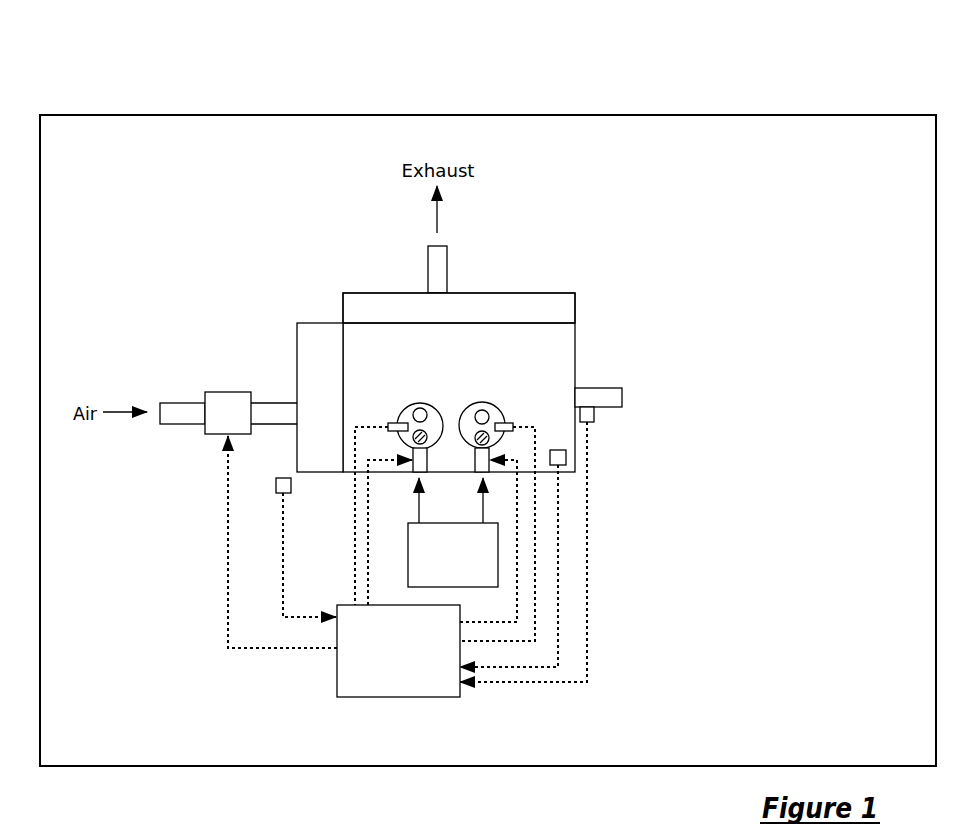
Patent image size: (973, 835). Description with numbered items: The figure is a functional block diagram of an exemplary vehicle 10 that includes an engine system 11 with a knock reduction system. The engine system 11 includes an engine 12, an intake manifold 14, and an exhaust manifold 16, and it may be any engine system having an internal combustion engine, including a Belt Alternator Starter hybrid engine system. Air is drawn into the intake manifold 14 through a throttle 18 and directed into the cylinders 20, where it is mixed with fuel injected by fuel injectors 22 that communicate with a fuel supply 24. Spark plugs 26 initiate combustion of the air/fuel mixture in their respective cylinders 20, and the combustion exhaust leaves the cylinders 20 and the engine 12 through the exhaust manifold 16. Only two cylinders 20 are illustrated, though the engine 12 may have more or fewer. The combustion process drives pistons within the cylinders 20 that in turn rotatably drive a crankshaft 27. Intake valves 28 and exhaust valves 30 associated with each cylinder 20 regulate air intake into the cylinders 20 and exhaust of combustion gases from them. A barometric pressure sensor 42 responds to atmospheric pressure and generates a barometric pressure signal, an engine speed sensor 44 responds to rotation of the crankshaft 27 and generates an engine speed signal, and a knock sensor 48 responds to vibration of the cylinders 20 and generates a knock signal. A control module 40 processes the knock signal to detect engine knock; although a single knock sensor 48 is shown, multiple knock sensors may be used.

The vehicle 10 is at (604, 88).
The engine system 11 is at (270, 309).
The engine 12 is at (575, 345).
The intake manifold 14 is at (322, 323).
The exhaust manifold 16 is at (557, 293).
The throttle 18 is at (230, 392).
The cylinders 20 is at (402, 416).
The fuel injectors 22 is at (413, 472).
The fuel supply 24 is at (455, 523).
The spark plugs 26 is at (512, 423).
The crankshaft 27 is at (618, 388).
The intake valves 28 is at (415, 407).
The exhaust valves 30 is at (477, 436).
The control module 40 is at (418, 697).
The barometric pressure sensor 42 is at (276, 490).
The engine speed sensor 44 is at (594, 420).
The knock sensor 48 is at (558, 450).